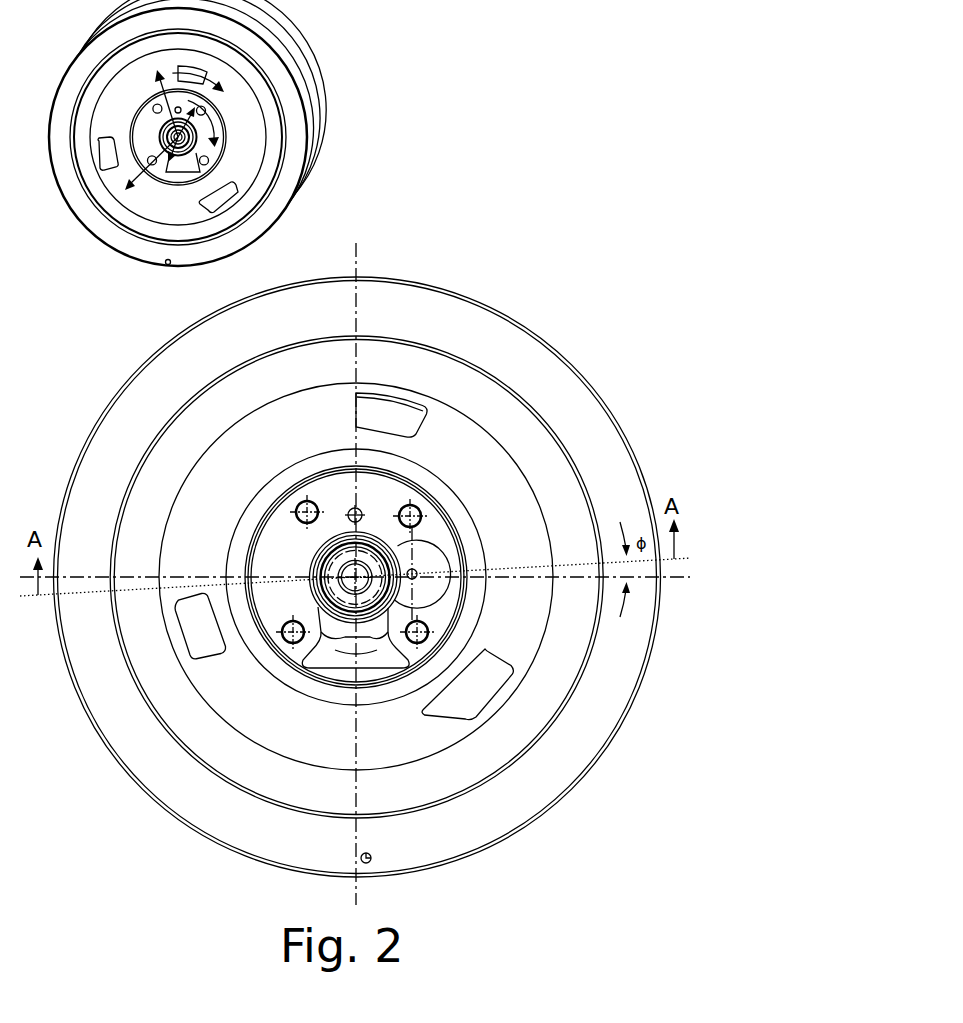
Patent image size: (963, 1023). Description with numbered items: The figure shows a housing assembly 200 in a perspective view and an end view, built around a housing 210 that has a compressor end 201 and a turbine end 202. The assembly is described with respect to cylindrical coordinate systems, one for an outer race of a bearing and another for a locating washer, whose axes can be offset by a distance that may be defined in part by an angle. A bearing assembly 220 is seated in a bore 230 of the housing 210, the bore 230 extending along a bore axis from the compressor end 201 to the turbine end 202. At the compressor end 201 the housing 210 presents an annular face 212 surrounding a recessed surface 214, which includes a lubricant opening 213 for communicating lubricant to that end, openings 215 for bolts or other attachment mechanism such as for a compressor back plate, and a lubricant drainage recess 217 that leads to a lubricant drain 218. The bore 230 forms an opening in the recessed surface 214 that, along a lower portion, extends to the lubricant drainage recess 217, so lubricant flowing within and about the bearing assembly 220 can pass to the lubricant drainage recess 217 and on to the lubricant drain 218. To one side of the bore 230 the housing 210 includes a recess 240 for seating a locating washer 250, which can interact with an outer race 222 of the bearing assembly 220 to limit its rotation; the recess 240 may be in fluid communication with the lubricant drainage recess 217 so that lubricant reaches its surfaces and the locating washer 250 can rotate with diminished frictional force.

The housing assembly 200 is at (545, 291).
The compressor end 201 is at (115, 397).
The turbine end 202 is at (327, 224).
The housing 210 is at (575, 367).
The annular face 212 is at (412, 374).
The lubricant opening 213 is at (349, 519).
The recessed surface 214 is at (292, 619).
The openings 215 is at (300, 503).
The lubricant drainage recess 217 is at (328, 625).
The lubricant drain 218 is at (369, 675).
The bearing assembly 220 is at (304, 553).
The outer race 222 is at (311, 573).
The bore 230 is at (311, 587).
The recess 240 is at (390, 547).
The locating washer 250 is at (433, 593).